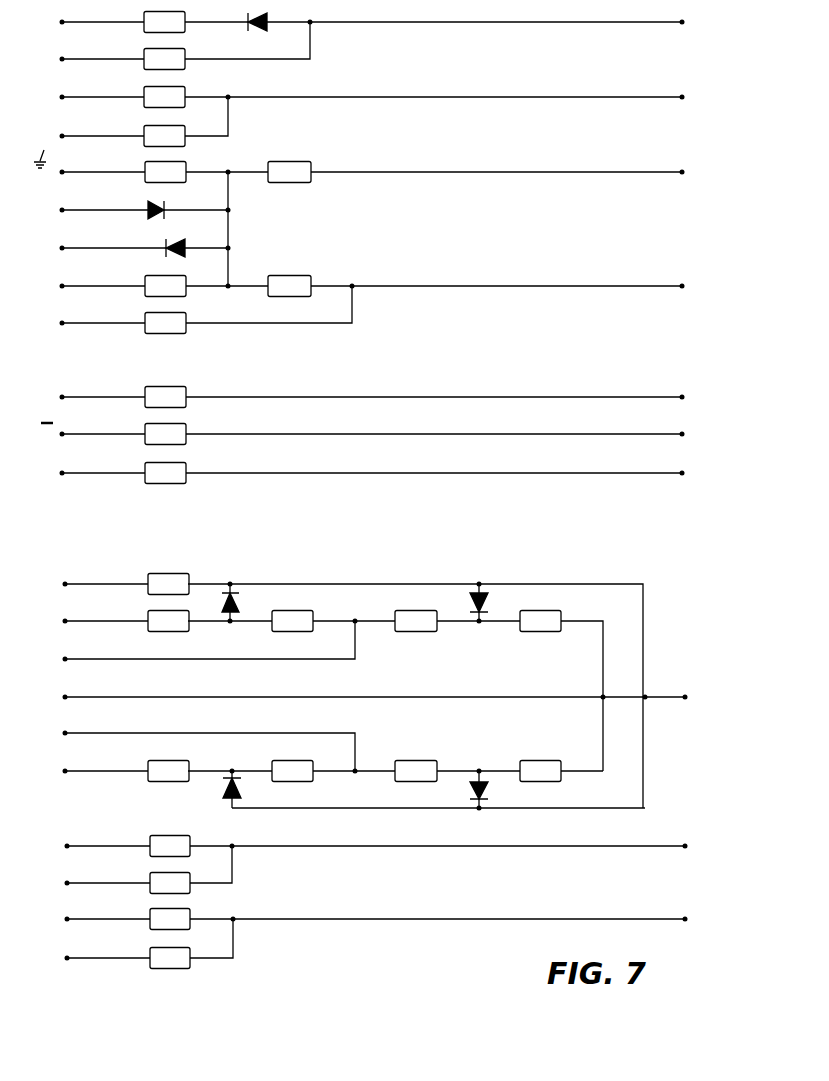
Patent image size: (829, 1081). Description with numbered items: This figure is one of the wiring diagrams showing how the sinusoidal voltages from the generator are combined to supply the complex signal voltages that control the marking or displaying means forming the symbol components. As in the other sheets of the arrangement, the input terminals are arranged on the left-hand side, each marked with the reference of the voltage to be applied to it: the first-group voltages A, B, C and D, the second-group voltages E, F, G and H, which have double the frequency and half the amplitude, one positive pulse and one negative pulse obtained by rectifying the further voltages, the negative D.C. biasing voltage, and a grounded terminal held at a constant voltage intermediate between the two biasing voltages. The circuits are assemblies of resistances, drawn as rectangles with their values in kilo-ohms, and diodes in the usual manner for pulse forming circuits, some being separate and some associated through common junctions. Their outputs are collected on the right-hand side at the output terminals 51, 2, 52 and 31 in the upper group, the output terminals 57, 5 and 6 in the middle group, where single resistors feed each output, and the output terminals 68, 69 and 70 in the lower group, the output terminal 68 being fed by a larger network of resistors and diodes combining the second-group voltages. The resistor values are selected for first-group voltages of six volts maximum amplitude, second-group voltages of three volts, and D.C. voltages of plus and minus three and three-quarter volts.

The output terminal 51 is at (379, 35).
The output terminal 2 is at (371, 111).
The output terminal 52 is at (378, 218).
The output terminal 31 is at (379, 298).
The output terminal 57 is at (378, 390).
The output terminal 5 is at (374, 429).
The output terminal 6 is at (371, 467).
The output terminal 68 is at (379, 686).
The output terminal 69 is at (378, 858).
The output terminal 70 is at (379, 933).